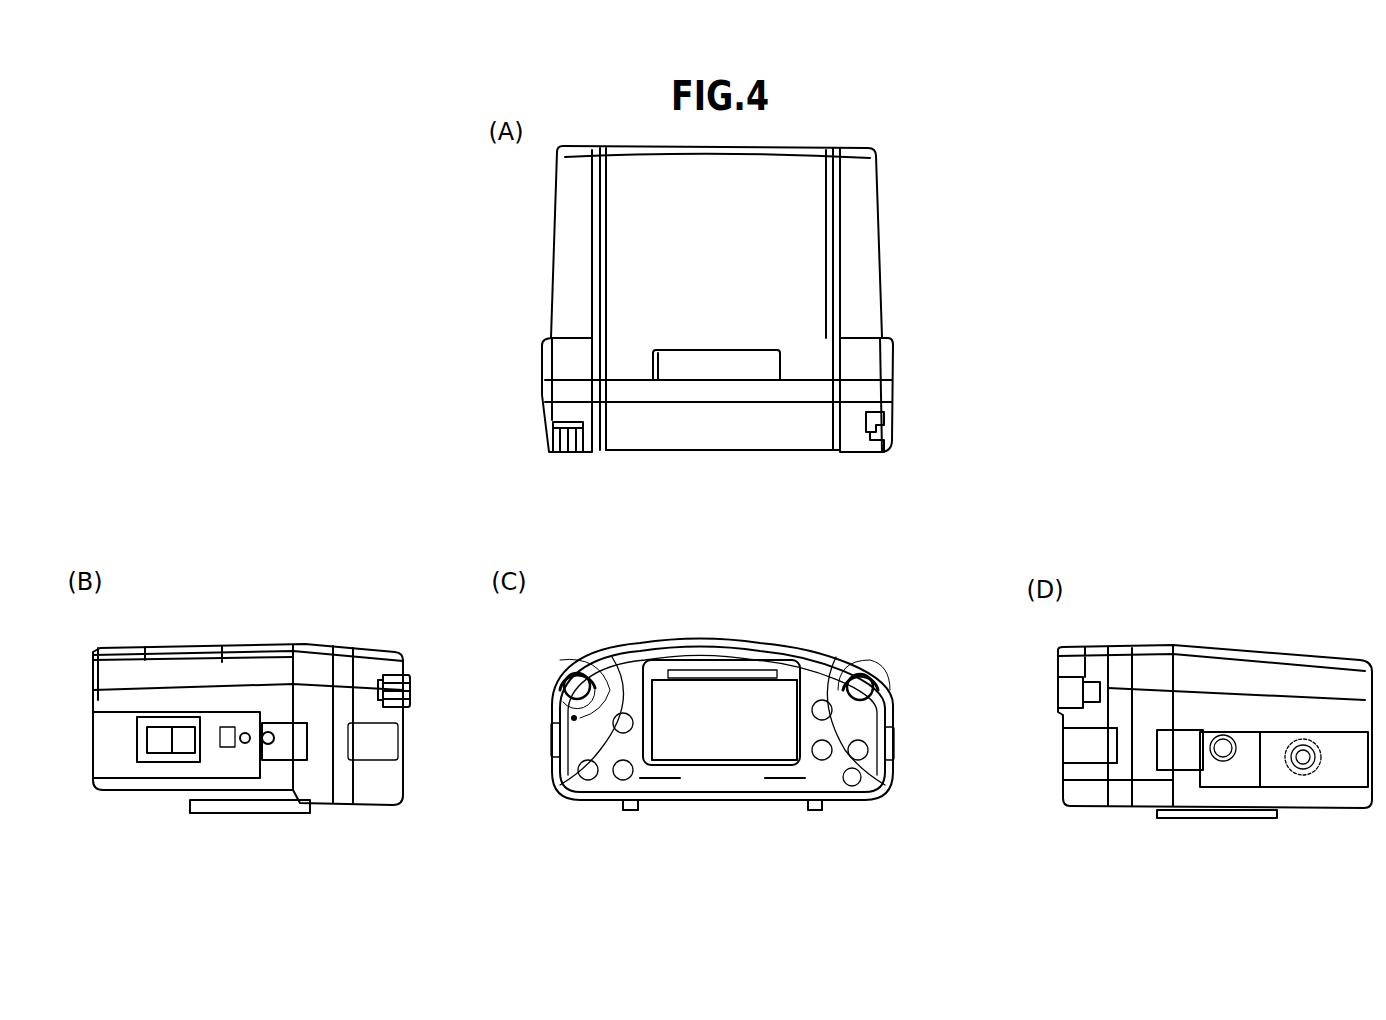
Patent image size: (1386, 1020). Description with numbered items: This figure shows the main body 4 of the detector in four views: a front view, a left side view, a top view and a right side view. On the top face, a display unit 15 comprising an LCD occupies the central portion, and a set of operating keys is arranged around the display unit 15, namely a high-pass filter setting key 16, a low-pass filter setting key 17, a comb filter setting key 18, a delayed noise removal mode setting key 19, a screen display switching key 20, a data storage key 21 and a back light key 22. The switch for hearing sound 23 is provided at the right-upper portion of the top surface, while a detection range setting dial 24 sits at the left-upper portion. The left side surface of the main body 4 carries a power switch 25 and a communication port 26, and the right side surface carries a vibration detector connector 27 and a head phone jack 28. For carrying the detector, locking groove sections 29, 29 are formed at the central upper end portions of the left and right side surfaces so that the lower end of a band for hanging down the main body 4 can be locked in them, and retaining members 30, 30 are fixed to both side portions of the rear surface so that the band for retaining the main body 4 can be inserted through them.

The main body 4 is at (901, 204).
The display unit 15 is at (750, 695).
The high-pass filter setting key 16 is at (870, 740).
The low-pass filter setting key 17 is at (860, 782).
The comb filter setting key 18 is at (821, 700).
The delayed noise removal mode setting key 19 is at (822, 760).
The screen display switching key 20 is at (622, 780).
The data storage key 21 is at (623, 712).
The back light key 22 is at (585, 775).
The switch for hearing sound 23 is at (868, 690).
The detection range setting dial 24 is at (575, 684).
The power switch 25 is at (160, 727).
The communication port 26 is at (233, 730).
The vibration detector connector 27 is at (1297, 750).
The head phone jack 28 is at (1213, 738).
The locking groove section 29 is at (383, 751).
The retaining member 30 is at (637, 811).